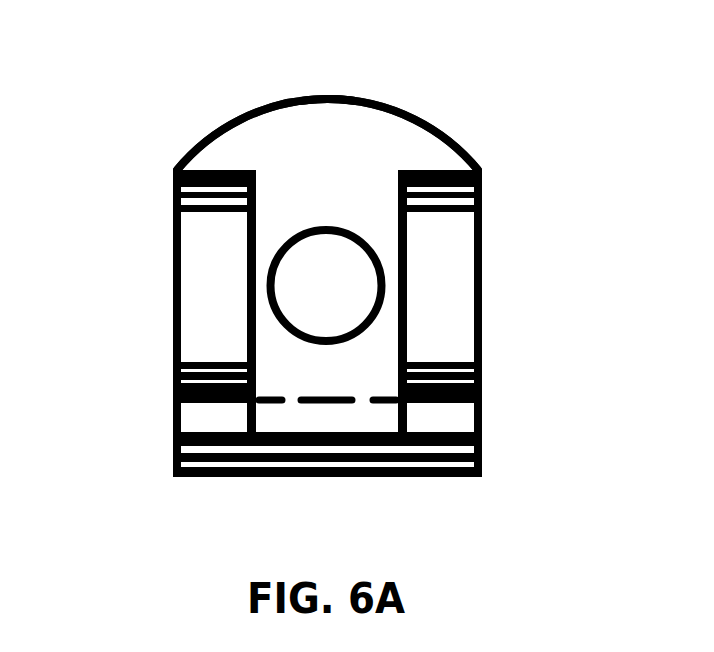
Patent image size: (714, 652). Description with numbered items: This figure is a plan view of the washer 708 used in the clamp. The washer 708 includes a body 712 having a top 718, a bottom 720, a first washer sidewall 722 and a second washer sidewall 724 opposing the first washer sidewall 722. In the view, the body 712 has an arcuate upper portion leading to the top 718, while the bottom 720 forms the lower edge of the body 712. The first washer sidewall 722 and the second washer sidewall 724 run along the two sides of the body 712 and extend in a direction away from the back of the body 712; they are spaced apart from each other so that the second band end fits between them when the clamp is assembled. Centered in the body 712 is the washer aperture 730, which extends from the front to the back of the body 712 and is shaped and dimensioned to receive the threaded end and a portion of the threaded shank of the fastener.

The washer 708 is at (177, 82).
The body 712 is at (420, 122).
The top 718 is at (333, 97).
The bottom 720 is at (330, 477).
The first washer sidewall 722 is at (207, 287).
The second washer sidewall 724 is at (432, 288).
The washer aperture 730 is at (330, 298).